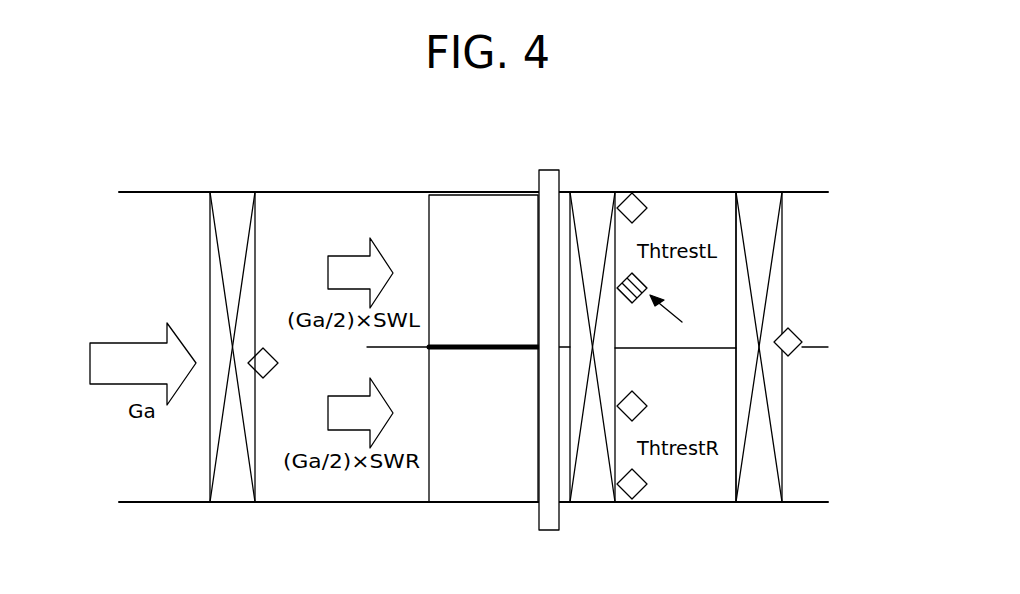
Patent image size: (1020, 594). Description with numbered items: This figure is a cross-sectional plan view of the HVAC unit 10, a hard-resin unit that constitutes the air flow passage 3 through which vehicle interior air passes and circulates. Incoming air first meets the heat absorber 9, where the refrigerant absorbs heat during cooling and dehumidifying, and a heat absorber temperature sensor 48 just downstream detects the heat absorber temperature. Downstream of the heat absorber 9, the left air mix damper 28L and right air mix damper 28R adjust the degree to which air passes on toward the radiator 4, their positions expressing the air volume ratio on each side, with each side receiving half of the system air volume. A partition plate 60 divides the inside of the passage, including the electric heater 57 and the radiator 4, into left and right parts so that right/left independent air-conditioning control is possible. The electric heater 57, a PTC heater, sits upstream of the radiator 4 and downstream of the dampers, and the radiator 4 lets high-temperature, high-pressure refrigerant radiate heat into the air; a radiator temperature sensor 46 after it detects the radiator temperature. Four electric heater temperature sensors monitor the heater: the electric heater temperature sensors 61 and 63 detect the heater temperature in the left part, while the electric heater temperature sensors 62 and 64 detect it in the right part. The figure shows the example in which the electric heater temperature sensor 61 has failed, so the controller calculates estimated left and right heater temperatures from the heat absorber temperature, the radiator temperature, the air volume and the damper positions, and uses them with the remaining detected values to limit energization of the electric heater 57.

The air flow passage 3 is at (360, 488).
The radiator 4 is at (760, 205).
The heat absorber 9 is at (232, 186).
The HVAC unit 10 is at (330, 186).
The left air mix damper 28L is at (488, 205).
The right air mix damper 28R is at (487, 488).
The radiator temperature sensor 46 is at (800, 332).
The heat absorber temperature sensor 48 is at (276, 352).
The electric heater 57 is at (600, 205).
The partition plate 60 is at (405, 351).
The electric heater temperature sensor 61 is at (630, 304).
The electric heater temperature sensor 62 is at (640, 397).
The electric heater temperature sensor 63 is at (640, 196).
The electric heater temperature sensor 64 is at (640, 494).